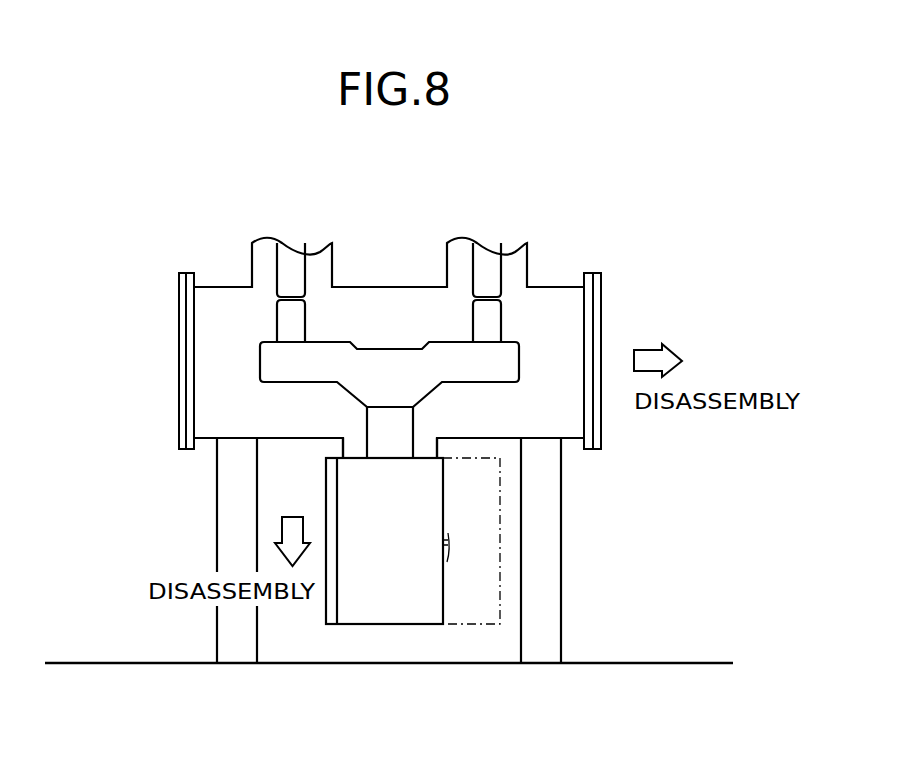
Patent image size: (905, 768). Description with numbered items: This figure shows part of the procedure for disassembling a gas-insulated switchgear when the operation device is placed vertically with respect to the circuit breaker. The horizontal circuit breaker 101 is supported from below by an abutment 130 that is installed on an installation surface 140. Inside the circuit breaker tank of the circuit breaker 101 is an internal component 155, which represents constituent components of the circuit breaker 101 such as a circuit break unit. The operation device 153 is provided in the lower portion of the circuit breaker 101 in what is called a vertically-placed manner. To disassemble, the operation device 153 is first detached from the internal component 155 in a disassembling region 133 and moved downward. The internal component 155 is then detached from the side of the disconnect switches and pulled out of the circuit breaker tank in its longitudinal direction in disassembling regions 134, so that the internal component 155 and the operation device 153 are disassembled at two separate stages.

The horizontal circuit breaker 101 is at (205, 360).
The abutment 130 is at (230, 550).
The disassembling region 133 is at (388, 458).
The disassembling regions 134 is at (488, 297).
The installation surface 140 is at (685, 663).
The operation device 153 is at (390, 612).
The internal component 155 is at (497, 362).